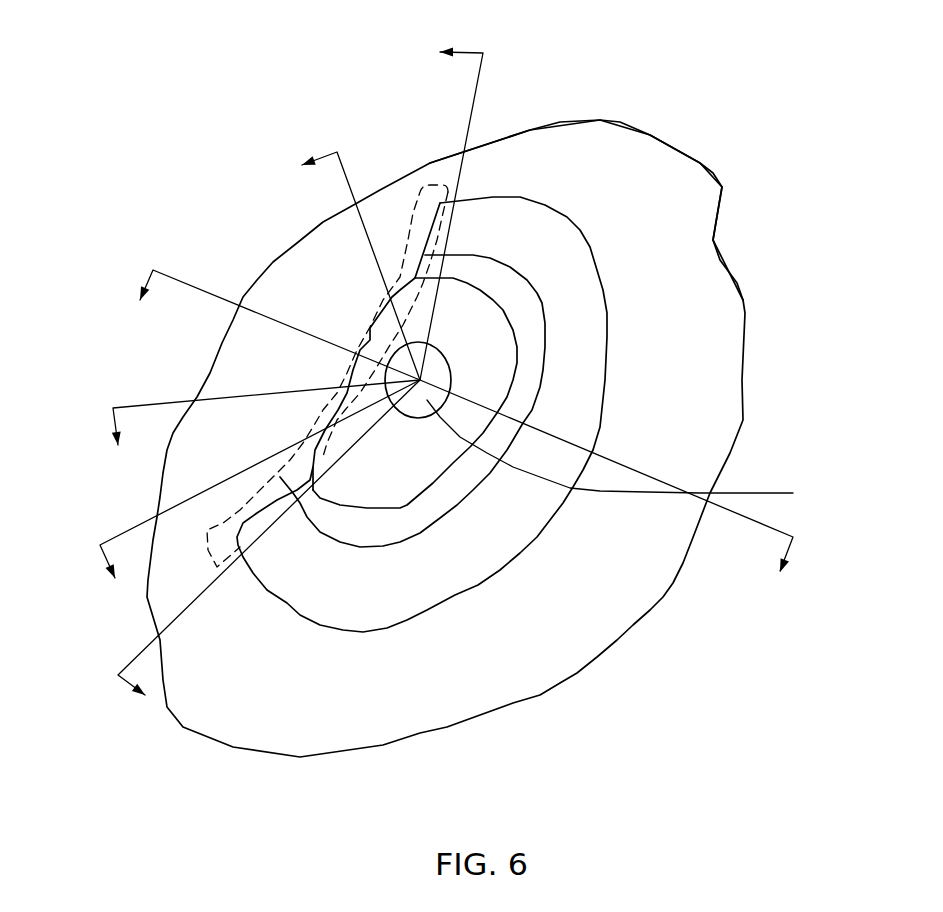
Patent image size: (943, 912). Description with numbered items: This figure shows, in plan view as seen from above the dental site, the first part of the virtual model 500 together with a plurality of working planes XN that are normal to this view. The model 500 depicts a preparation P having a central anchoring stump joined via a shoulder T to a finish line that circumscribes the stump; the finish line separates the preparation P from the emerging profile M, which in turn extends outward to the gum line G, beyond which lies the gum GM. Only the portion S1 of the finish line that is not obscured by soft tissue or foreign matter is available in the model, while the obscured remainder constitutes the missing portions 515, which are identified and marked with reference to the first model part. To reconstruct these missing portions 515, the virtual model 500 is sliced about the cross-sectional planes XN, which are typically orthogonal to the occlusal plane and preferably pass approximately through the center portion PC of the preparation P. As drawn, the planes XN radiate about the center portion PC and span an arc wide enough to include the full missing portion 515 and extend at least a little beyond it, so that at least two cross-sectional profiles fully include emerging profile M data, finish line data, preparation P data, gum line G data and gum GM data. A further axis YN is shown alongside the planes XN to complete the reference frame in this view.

The virtual model 500 is at (627, 100).
The missing portions 515 is at (432, 188).
The gum GM is at (623, 172).
The gum line G is at (597, 255).
The emerging profile M is at (580, 302).
The portion of finish line S1 is at (547, 337).
The shoulder T is at (490, 277).
The preparation P is at (480, 372).
The center portion of the preparation PC is at (627, 453).
The working planes XN is at (428, 303).
The Y axis normal YN is at (259, 548).